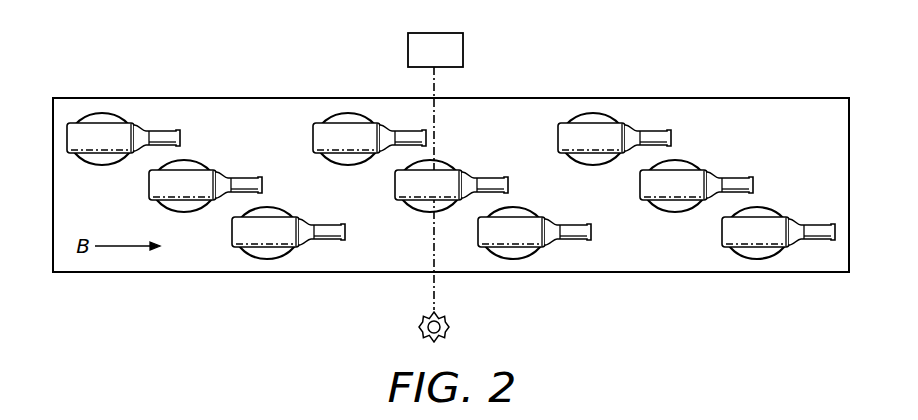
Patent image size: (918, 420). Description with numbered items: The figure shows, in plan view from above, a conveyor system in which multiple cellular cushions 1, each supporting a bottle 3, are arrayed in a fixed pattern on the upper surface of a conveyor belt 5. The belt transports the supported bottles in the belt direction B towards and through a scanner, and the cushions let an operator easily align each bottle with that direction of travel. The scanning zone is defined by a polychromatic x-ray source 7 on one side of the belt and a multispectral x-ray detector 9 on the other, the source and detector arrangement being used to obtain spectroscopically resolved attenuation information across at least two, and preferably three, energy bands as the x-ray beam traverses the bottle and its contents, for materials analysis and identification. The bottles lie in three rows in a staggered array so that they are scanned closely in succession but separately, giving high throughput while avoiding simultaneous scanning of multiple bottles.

The cellular cushion 1 is at (347, 118).
The bottle 3 is at (100, 122).
The conveyor belt 5 is at (229, 117).
The polychromatic x-ray source 7 is at (450, 327).
The multispectral x-ray detector 9 is at (463, 47).